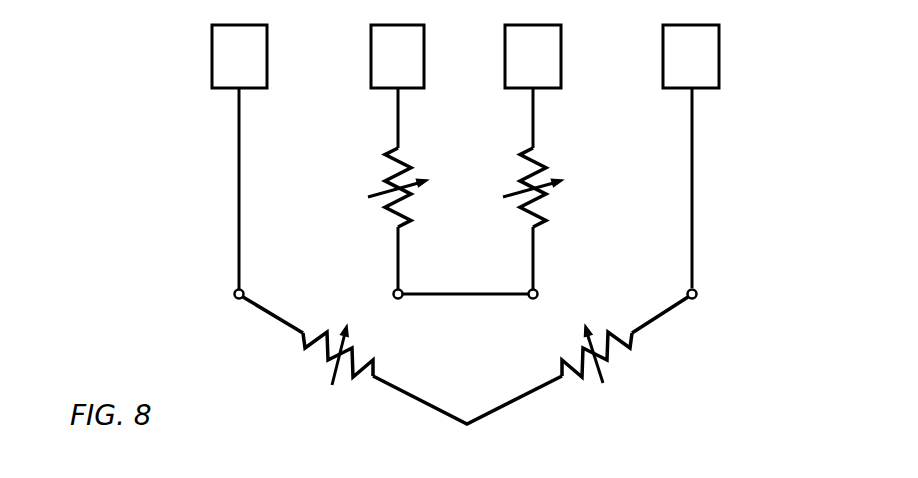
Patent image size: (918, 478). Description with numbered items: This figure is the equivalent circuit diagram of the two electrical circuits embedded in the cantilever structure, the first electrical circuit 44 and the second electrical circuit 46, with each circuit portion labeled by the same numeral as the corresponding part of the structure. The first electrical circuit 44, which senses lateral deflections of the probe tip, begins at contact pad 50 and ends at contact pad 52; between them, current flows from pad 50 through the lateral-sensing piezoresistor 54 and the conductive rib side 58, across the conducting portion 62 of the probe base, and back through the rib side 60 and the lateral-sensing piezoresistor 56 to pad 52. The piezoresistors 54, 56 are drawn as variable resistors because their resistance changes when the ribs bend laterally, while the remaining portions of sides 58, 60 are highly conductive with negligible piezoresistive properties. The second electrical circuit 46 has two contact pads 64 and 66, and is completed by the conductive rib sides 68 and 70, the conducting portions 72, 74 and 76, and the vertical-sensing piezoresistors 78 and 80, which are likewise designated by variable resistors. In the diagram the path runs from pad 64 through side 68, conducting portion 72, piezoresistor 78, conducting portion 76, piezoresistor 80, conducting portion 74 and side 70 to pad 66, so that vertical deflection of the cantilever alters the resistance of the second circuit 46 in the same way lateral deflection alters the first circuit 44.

The first electrical circuit 44 is at (592, 250).
The second electrical circuit 46 is at (205, 216).
The contact pad 50 is at (384, 67).
The contact pad 52 is at (519, 67).
The lateral-sensing piezoresistor 54 is at (386, 175).
The lateral-sensing piezoresistor 56 is at (540, 206).
The side of rib 58 is at (398, 113).
The side of rib 60 is at (533, 113).
The conducting portion 62 is at (460, 296).
The contact pad 64 is at (225, 67).
The contact pad 66 is at (677, 67).
The conductive side of rib 68 is at (239, 113).
The conductive side of rib 70 is at (692, 185).
The conducting portion 72 is at (258, 311).
The conducting portion 74 is at (673, 310).
The conducting portion 76 is at (508, 402).
The vertical-sensing piezoresistor 78 is at (327, 358).
The vertical-sensing piezoresistor 80 is at (607, 355).